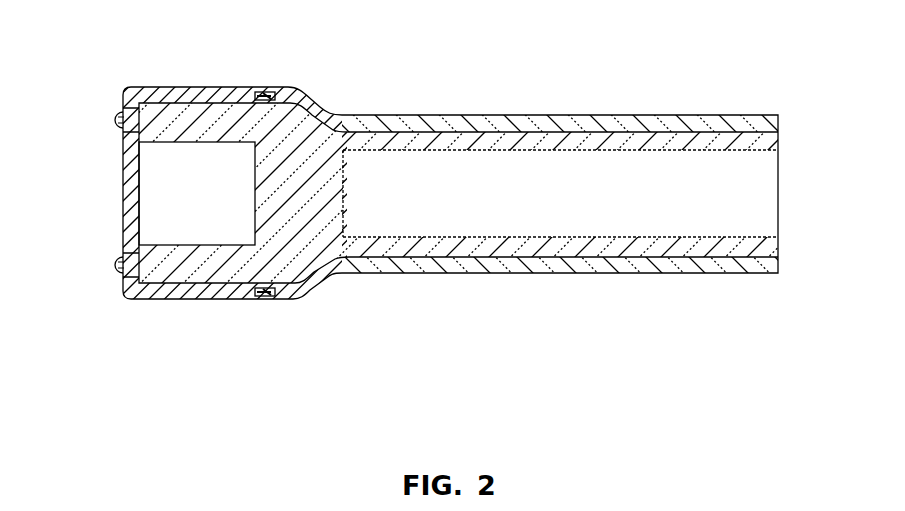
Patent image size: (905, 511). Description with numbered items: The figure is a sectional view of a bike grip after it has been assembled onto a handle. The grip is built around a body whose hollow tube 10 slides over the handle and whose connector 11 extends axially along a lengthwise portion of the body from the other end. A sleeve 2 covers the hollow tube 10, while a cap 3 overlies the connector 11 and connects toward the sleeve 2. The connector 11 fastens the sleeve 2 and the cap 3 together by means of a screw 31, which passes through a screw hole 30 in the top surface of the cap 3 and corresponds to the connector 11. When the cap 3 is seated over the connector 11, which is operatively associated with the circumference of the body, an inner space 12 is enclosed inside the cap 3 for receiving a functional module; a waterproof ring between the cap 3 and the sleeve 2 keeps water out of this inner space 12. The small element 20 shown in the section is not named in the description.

The sleeve 2 is at (433, 127).
The cap 3 is at (173, 300).
The hollow tube 10 is at (543, 147).
The connector 11 is at (197, 267).
The inner space 12 is at (209, 213).
The fastening element 20 is at (258, 96).
The screw hole 30 is at (138, 121).
The screw 31 is at (117, 122).